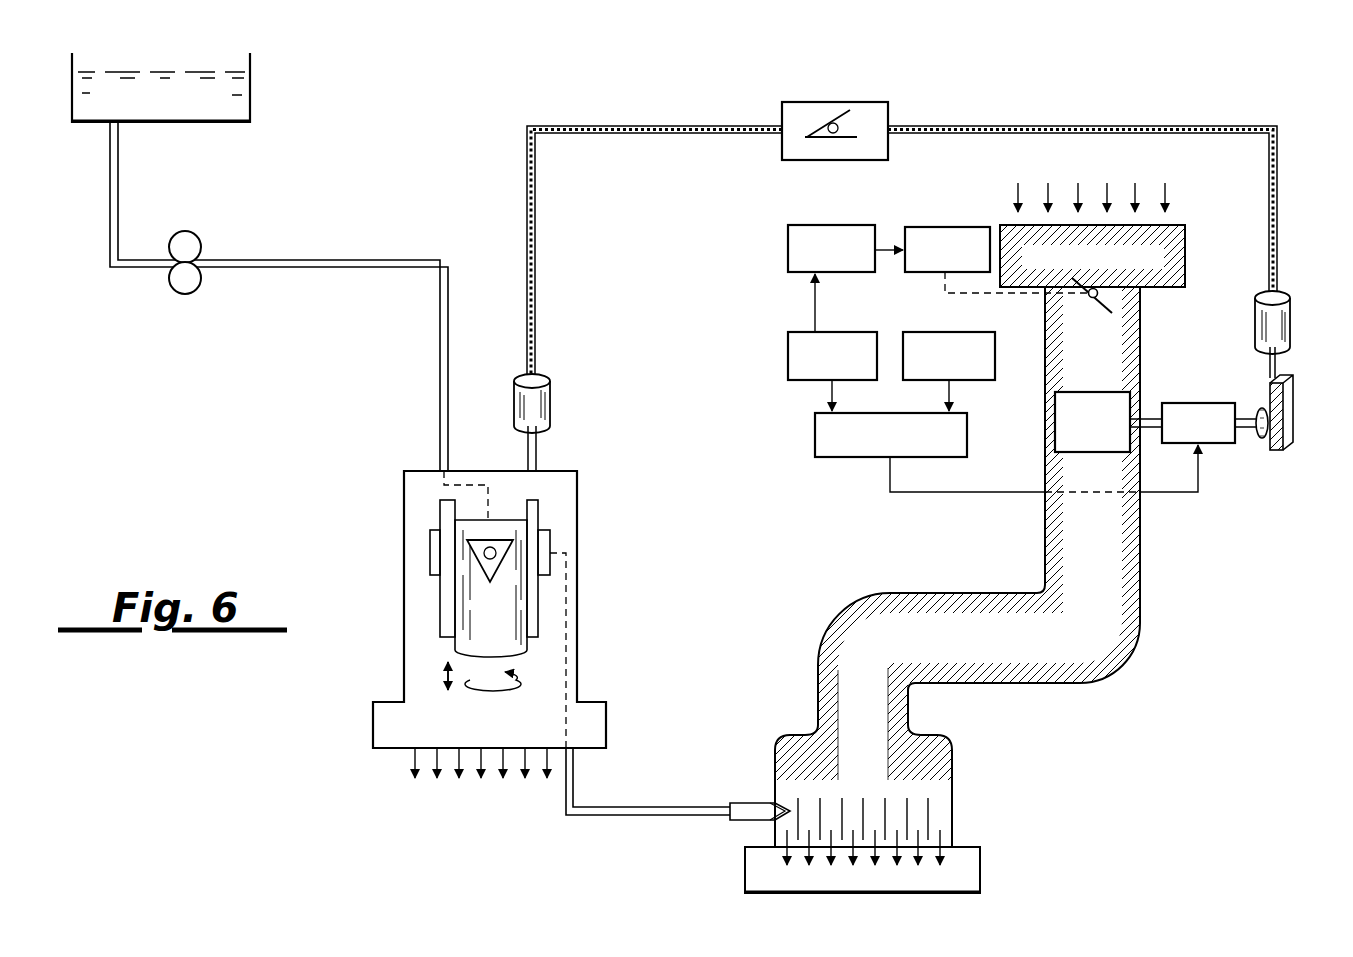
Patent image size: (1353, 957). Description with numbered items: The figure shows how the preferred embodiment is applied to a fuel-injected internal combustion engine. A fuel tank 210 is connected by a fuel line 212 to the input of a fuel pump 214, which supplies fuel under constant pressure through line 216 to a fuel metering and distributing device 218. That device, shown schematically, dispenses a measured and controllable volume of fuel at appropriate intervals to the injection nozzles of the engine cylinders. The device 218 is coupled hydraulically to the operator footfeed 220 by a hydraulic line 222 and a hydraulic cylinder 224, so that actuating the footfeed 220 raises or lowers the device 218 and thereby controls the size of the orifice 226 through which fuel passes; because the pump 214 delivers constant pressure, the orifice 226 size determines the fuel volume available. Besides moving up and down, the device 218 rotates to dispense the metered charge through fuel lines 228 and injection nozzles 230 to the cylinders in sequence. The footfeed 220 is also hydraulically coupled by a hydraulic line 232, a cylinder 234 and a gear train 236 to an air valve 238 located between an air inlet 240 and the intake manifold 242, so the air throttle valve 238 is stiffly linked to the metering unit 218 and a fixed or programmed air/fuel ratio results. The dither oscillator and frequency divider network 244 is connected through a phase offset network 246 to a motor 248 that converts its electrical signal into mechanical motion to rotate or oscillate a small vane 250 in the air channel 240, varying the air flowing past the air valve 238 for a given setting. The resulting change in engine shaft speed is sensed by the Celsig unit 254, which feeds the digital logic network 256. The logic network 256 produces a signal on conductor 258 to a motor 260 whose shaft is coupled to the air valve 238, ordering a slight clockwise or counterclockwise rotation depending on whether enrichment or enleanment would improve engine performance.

The fuel tank 210 is at (250, 82).
The fuel line 212 is at (110, 206).
The fuel pump 214 is at (158, 287).
The line 216 is at (440, 365).
The fuel metering and distributing device 218 is at (404, 488).
The operator footfeed 220 is at (821, 133).
The hydraulic line 222 is at (537, 310).
The hydraulic cylinder 224 is at (550, 395).
The orifice 226 is at (496, 550).
The fuel lines 228 is at (575, 773).
The injection nozzles 230 is at (740, 822).
The hydraulic line 232 is at (1080, 125).
The cylinder 234 is at (1290, 313).
The gear train 236 is at (1265, 452).
The air valve 238 is at (1080, 392).
The air inlet 240 is at (1010, 225).
The intake manifold 242 is at (905, 593).
The dither oscillator and frequency divider network 244 is at (830, 332).
The phase offset network 246 is at (815, 225).
The motor 248 is at (940, 227).
The vane 250 is at (1110, 303).
The Celsig unit 254 is at (945, 332).
The digital logic network 256 is at (815, 435).
The conductor 258 is at (930, 492).
The motor 260 is at (1178, 403).